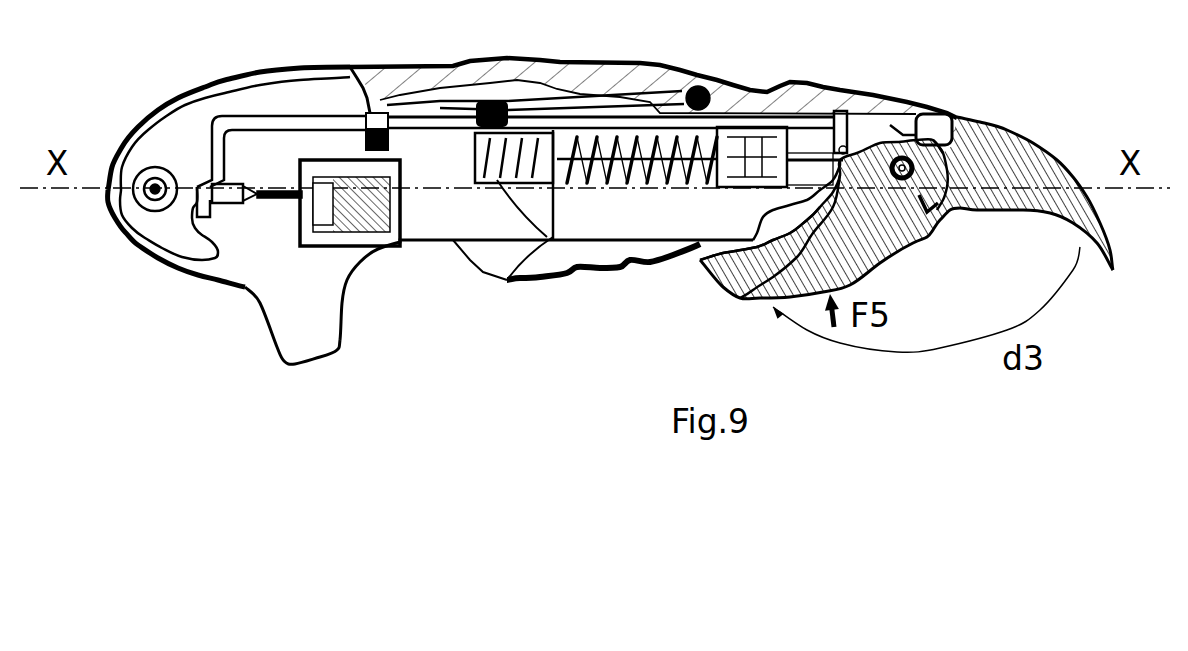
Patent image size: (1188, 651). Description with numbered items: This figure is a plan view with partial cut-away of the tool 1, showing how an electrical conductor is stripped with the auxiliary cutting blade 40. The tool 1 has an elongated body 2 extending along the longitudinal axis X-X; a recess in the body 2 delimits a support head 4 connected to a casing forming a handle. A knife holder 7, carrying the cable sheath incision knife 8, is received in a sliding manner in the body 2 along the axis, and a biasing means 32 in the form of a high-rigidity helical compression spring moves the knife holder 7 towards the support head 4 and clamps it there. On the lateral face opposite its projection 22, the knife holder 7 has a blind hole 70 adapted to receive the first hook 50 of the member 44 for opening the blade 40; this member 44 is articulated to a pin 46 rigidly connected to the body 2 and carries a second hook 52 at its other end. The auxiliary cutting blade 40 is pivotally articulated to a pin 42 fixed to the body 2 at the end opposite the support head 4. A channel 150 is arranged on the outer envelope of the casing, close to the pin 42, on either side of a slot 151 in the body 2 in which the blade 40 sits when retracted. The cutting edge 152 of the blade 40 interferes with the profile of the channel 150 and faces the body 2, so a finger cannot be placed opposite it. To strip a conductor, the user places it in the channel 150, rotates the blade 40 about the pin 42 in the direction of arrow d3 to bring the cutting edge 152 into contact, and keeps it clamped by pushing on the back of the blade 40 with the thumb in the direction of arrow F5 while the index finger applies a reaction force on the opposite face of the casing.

The tool 1 is at (115, 124).
The elongated body 2 is at (503, 298).
The support head 4 is at (138, 259).
The knife holder 7 is at (366, 271).
The cable sheath incision knife 8 is at (277, 219).
The projection 22 is at (307, 337).
The biasing means 32 is at (607, 183).
The auxiliary cutting blade 40 is at (873, 263).
The pin 42 is at (913, 165).
The member for opening the blade 44 is at (808, 90).
The pin 46 is at (701, 88).
The first hook 50 is at (373, 124).
The second hook 52 is at (907, 137).
The blind hole 70 is at (377, 153).
The channel 150 is at (757, 280).
The slot 151 is at (710, 253).
The cutting edge 152 is at (920, 233).